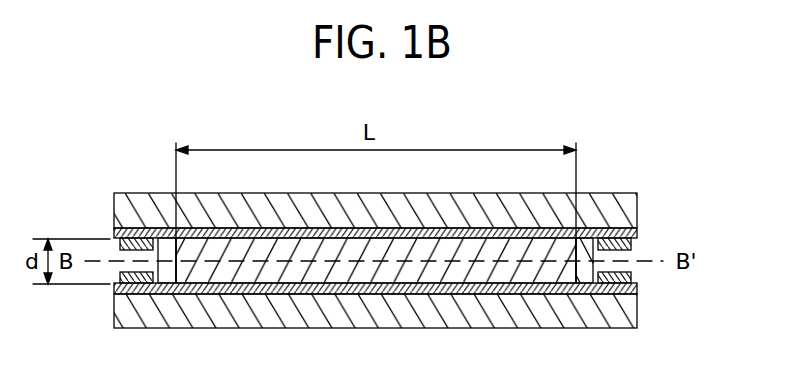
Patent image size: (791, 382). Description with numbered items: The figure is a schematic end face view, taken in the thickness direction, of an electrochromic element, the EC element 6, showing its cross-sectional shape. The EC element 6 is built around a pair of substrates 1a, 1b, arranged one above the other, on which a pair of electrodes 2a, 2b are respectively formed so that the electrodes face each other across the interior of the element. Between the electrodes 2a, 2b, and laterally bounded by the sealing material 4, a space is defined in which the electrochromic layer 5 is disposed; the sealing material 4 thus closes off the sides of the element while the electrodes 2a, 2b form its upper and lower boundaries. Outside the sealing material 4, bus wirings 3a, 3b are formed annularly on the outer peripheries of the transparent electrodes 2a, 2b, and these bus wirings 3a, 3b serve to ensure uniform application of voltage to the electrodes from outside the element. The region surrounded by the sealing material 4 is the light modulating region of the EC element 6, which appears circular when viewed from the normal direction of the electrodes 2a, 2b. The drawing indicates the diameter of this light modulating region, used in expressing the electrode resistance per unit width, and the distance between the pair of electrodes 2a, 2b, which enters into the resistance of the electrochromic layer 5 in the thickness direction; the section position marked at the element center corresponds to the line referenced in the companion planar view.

The EC element 6 is at (513, 137).
The substrate 1a is at (410, 200).
The substrate 1b is at (420, 318).
The electrode 2a is at (338, 229).
The electrode 2b is at (332, 288).
The bus wiring 3a is at (133, 243).
The bus wiring 3b is at (138, 280).
The sealing material 4 is at (583, 287).
The electrochromic layer 5 is at (305, 250).